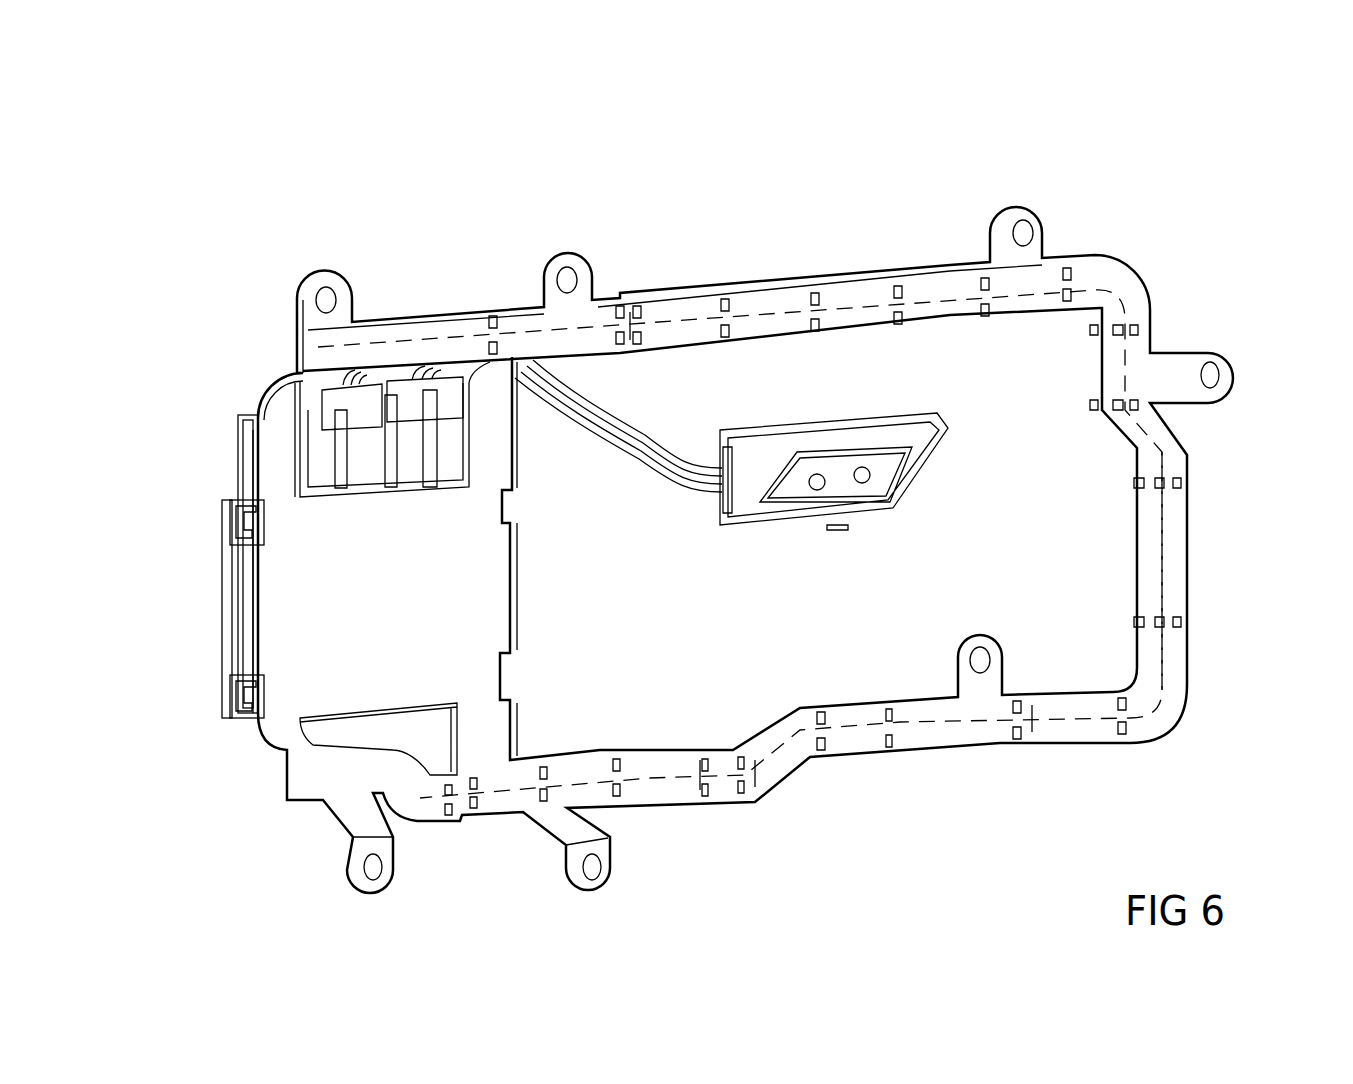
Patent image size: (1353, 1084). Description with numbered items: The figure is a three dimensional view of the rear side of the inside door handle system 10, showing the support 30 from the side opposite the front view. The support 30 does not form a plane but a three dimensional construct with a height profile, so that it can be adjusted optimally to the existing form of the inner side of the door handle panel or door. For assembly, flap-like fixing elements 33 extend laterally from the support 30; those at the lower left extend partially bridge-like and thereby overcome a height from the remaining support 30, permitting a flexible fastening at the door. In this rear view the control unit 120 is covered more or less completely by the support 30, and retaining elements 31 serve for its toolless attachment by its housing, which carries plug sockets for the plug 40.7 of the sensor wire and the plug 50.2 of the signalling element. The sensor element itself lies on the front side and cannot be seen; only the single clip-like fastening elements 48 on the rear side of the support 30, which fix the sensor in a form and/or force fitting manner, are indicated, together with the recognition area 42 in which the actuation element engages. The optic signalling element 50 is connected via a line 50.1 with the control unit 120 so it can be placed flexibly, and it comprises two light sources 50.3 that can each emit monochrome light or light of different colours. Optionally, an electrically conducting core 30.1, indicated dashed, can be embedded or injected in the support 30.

The inside door handle system 10 is at (718, 192).
The support 30 is at (1120, 287).
The electrically conducting core 30.1 is at (1175, 530).
The retaining elements 31 is at (228, 493).
The fixing elements 33 is at (585, 262).
The plug 40.7 is at (360, 408).
The recognition area 42 is at (650, 620).
The fastening elements 48 is at (884, 290).
The signalling element 50 is at (912, 470).
The line 50.1 is at (660, 440).
The plug 50.2 is at (445, 393).
The light sources 50.3 is at (817, 474).
The control unit 120 is at (322, 450).